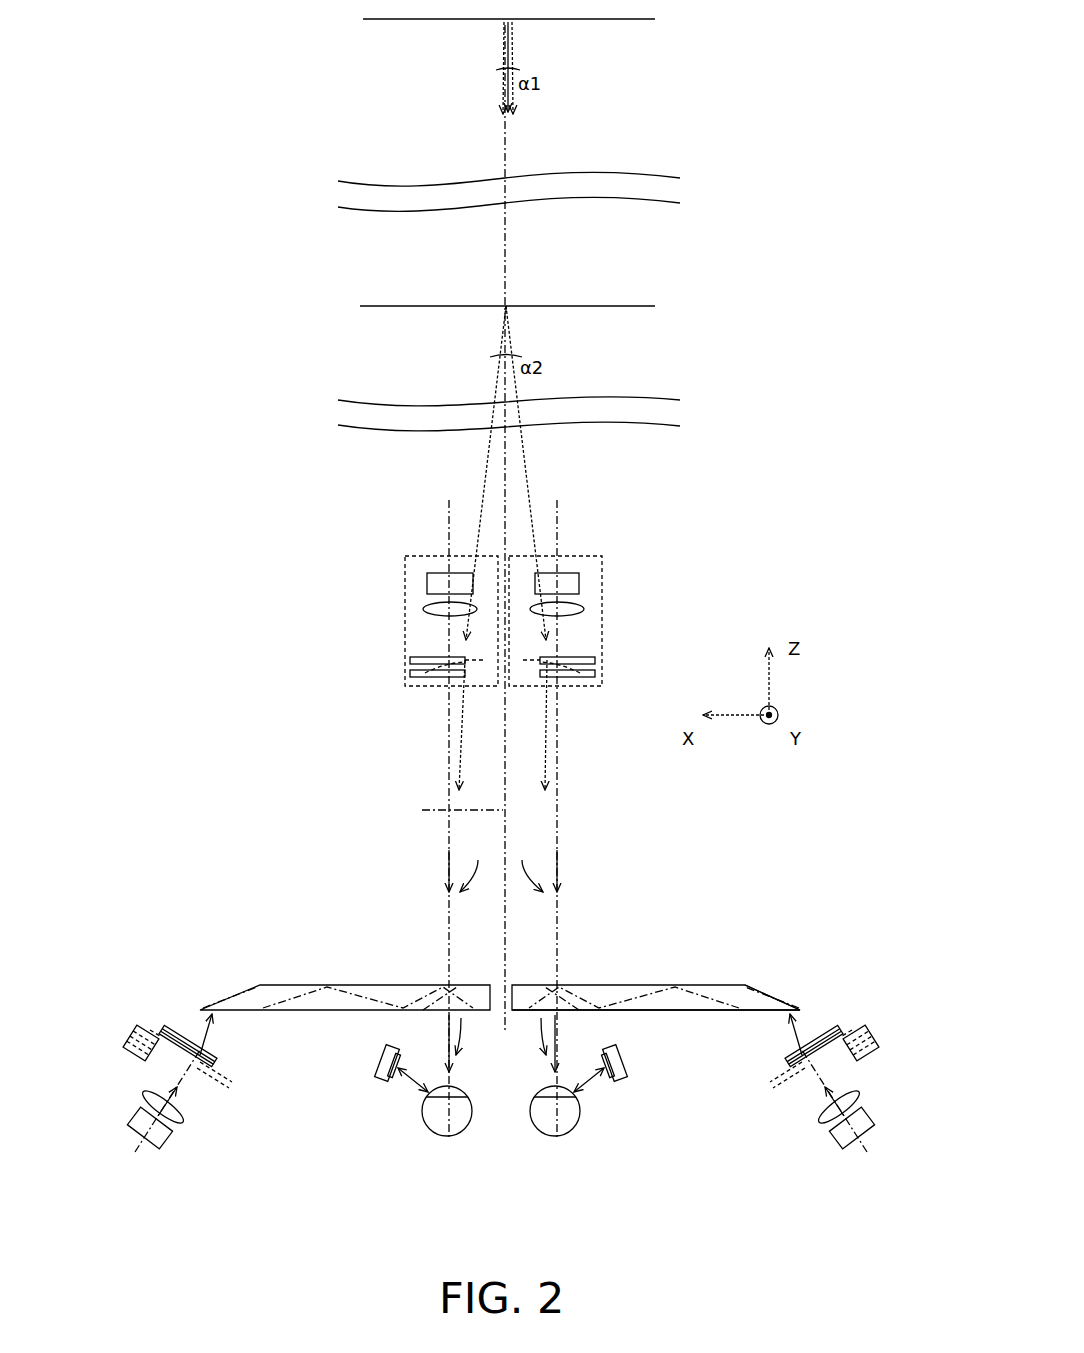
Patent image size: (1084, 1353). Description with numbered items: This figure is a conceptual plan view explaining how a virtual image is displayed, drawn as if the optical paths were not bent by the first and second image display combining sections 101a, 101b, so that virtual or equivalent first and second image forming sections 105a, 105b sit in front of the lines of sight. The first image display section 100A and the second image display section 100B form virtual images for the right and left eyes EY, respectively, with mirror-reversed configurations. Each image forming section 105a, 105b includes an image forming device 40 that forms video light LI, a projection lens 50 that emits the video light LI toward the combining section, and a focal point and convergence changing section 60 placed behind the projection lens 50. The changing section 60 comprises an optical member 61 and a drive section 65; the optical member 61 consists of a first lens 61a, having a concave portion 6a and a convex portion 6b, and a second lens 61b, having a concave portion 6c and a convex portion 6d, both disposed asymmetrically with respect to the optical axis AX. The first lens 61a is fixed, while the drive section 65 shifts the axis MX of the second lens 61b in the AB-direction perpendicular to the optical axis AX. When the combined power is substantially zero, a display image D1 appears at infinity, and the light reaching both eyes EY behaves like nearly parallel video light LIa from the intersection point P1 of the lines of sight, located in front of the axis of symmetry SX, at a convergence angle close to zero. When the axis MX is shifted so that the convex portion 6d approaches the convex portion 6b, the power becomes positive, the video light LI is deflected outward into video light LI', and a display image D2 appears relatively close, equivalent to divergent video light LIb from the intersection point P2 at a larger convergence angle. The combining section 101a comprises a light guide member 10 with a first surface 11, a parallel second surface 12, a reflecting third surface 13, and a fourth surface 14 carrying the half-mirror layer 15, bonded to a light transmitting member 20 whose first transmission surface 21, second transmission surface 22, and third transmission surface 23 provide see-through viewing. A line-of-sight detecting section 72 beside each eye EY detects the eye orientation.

The light guide member 10 is at (362, 985).
The first surface 11 is at (668, 1012).
The second surface 12 is at (690, 985).
The third surface 13 is at (768, 988).
The fourth surface 14 is at (501, 969).
The half-mirror layer 15 is at (578, 985).
The light transmitting member 20 is at (475, 985).
The first transmission surface 21 is at (518, 1012).
The second transmission surface 22 is at (520, 985).
The third transmission surface 23 is at (562, 1012).
The image forming device 40 is at (427, 583).
The projection lens 50 is at (440, 605).
The focal point and convergence changing section 60 is at (133, 1020).
The optical member 61 is at (405, 670).
The first lens 61a is at (222, 1072).
The second lens 61b is at (227, 1087).
The drive section 65 is at (125, 1040).
The concave portion 6a is at (183, 1035).
The convex portion 6b is at (205, 1058).
The concave portion 6c is at (182, 1058).
The convex portion 6d is at (150, 1028).
The line-of-sight detecting section 72 is at (380, 1080).
The first image display section 100A is at (750, 942).
The second image display section 100B is at (265, 942).
The first image display combining section 101a is at (665, 942).
The second image display combining section 101b is at (336, 942).
The first image forming section 105a is at (595, 610).
The second image forming section 105b is at (412, 610).
The AB-direction AB is at (435, 653).
The optical axis AX is at (446, 778).
The axis of symmetry SX is at (449, 808).
The axis of second lens MX is at (215, 1060).
The video light LI is at (501, 1003).
The deflected video light LI' is at (501, 966).
The video light from display image D1 LIa is at (503, 108).
The video light from display image D2 LIb is at (475, 530).
The eye EY is at (446, 1137).
The intersection point P1 is at (505, 23).
The intersection point P2 is at (504, 310).
The display image D1 is at (512, 23).
The display image D2 is at (510, 310).